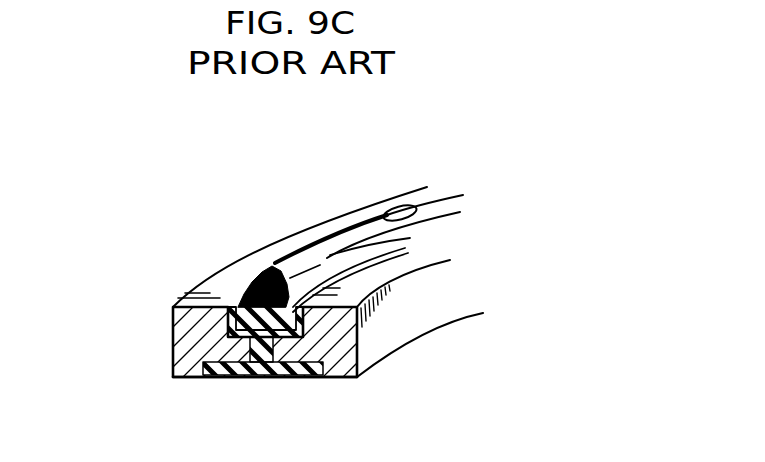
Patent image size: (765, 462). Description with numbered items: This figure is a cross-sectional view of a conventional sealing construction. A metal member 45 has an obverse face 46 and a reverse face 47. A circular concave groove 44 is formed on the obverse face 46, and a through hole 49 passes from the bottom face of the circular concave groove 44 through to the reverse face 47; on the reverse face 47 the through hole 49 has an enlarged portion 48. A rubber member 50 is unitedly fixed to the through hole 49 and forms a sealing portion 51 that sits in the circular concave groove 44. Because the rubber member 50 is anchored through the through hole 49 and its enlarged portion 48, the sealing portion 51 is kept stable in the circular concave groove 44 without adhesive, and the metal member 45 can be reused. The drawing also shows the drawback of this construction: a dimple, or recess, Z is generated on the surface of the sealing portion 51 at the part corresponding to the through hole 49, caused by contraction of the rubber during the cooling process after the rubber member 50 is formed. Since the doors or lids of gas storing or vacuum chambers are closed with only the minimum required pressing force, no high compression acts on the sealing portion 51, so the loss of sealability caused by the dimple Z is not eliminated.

The circular concave groove 44 is at (225, 312).
The metal member 45 is at (418, 327).
The obverse face 46 is at (413, 270).
The reverse face 47 is at (337, 378).
The enlarged portion 48 is at (233, 378).
The through hole 49 is at (263, 378).
The rubber member 50 is at (250, 352).
The sealing portion 51 is at (250, 300).
The dimple (recess) Z is at (262, 268).